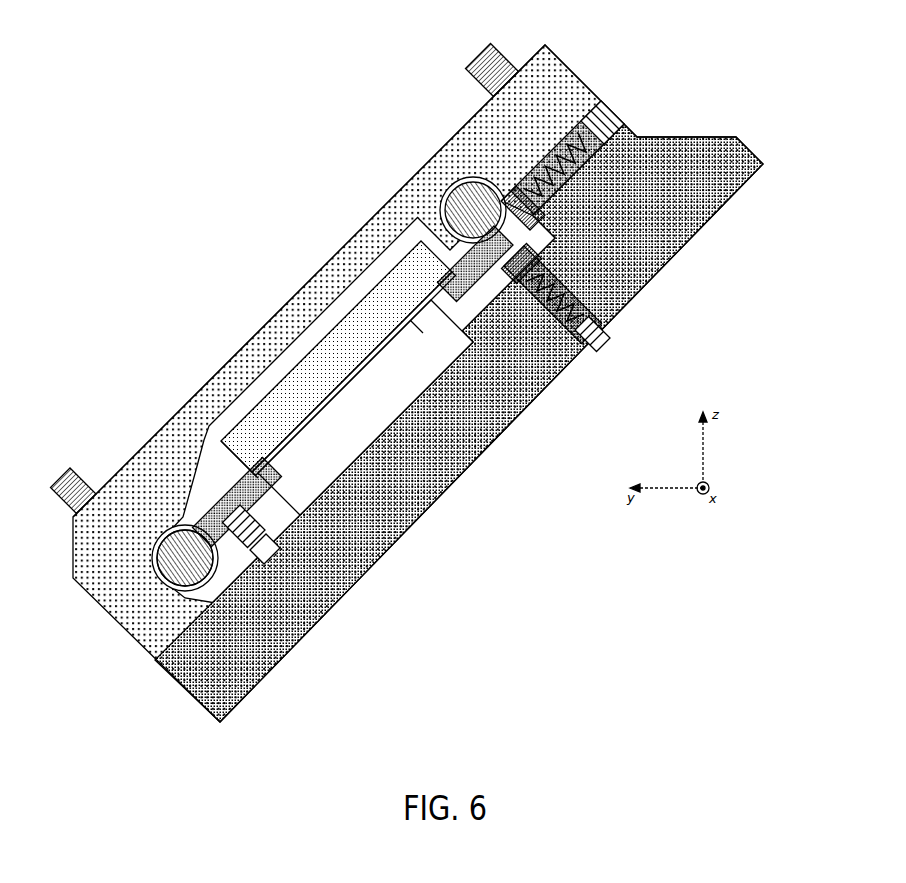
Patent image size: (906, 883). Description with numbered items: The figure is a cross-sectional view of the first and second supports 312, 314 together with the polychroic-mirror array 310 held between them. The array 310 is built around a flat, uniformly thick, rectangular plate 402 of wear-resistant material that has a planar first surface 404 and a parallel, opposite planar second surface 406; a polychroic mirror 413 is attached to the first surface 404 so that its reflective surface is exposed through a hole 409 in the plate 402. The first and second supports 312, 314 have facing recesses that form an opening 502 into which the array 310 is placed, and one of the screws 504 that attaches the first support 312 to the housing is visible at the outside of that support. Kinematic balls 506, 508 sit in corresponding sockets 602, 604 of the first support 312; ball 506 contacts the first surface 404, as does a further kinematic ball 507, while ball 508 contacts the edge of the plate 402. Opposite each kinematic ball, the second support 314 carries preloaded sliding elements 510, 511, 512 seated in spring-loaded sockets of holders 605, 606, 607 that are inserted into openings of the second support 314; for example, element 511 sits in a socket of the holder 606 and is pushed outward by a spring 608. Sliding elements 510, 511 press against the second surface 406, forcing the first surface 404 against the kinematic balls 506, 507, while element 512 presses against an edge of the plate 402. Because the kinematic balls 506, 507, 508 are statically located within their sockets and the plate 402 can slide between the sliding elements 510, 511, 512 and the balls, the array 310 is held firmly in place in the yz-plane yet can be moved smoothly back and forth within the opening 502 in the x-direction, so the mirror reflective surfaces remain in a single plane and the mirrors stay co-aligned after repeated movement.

The polychroic-mirror array 310 is at (308, 333).
The first support 312 is at (336, 281).
The second support 314 is at (459, 423).
The plate 402 is at (206, 414).
The first surface 404 is at (401, 251).
The second surface 406 is at (272, 498).
The hole 409 is at (354, 374).
The polychroic mirror 413 is at (337, 388).
The opening 502 is at (350, 433).
The screw 504 is at (98, 468).
The kinematic ball 506 is at (448, 200).
The kinematic ball 507 is at (163, 488).
The kinematic ball 508 is at (152, 629).
The sliding element 510 is at (324, 614).
The sliding element 511 is at (500, 272).
The sliding element 512 is at (536, 160).
The socket 602 is at (412, 205).
The socket 604 is at (132, 600).
The holder 605 is at (330, 563).
The holder 606 is at (636, 341).
The holder 607 is at (600, 147).
The spring 608 is at (520, 290).